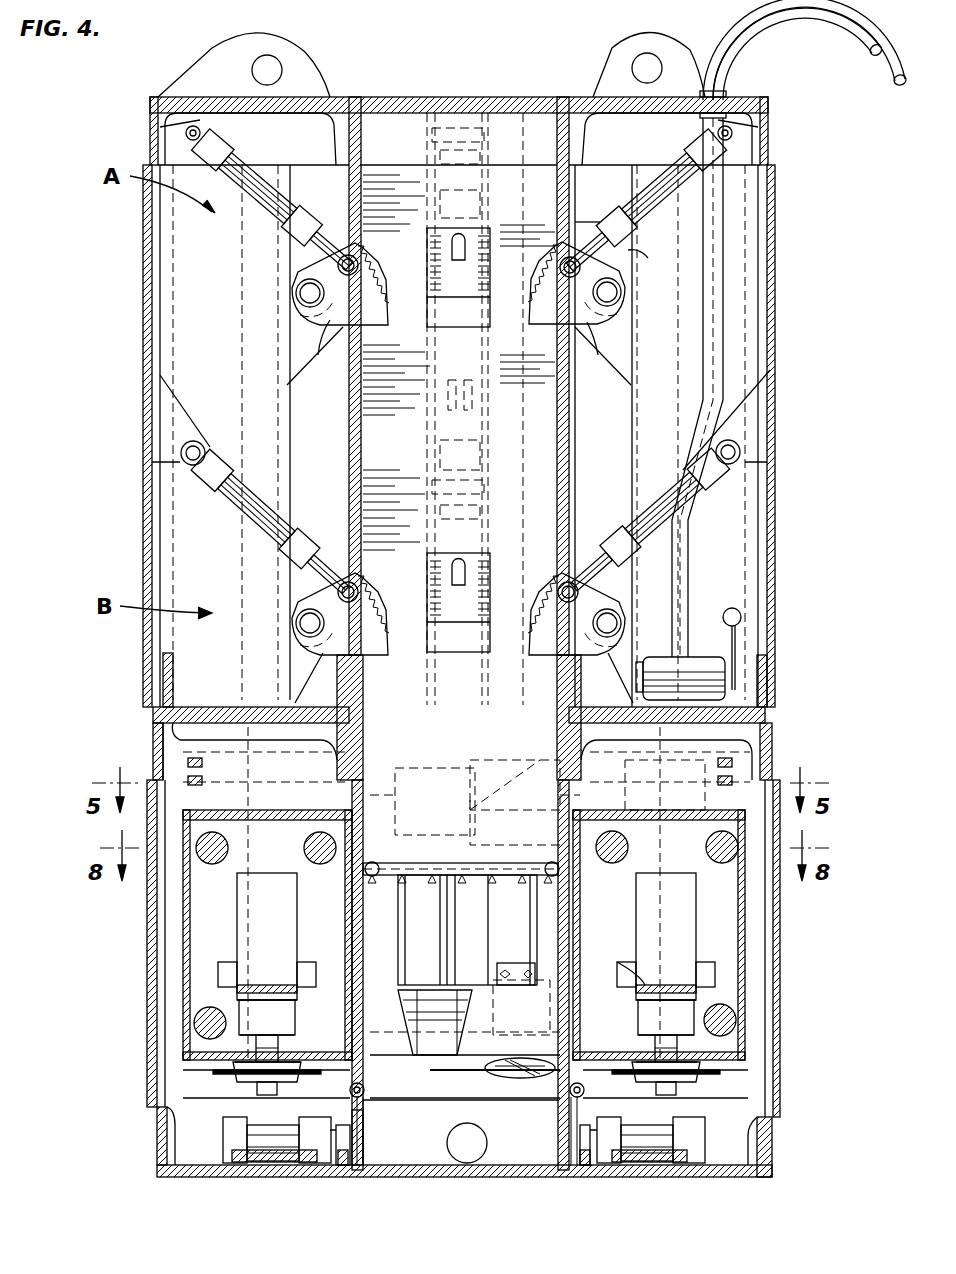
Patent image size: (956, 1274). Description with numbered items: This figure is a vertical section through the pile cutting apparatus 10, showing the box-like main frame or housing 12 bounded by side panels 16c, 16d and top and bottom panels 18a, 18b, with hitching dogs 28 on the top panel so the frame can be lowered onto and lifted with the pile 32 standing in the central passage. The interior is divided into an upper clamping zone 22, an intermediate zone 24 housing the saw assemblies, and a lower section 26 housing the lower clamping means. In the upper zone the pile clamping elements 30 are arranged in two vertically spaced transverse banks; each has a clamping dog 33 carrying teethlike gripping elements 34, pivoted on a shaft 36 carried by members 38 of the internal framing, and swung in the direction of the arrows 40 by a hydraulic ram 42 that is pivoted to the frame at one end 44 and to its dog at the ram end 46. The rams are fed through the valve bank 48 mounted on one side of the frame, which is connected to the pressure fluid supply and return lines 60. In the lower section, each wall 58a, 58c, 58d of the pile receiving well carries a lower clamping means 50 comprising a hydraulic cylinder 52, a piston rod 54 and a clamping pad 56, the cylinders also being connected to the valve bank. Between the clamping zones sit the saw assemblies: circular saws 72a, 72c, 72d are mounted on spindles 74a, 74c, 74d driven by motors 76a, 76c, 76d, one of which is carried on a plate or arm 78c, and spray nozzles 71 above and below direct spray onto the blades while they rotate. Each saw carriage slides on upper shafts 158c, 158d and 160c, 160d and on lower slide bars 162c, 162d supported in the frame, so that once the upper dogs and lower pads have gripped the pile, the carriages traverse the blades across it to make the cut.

The pile cutting apparatus 10 is at (104, 215).
The main frame or housing 12 is at (398, 80).
The side panel 16c is at (770, 230).
The side panel 16d is at (150, 300).
The top panel 18a is at (590, 100).
The bottom panel 18b is at (624, 1180).
The upper clamping zone 22 is at (782, 294).
The intermediate zone 24 is at (782, 922).
The lower section 26 is at (784, 1110).
The hitching dog 28 is at (287, 65).
The pile clamping element 30 is at (332, 330).
The pile 32 is at (560, 447).
The clamping dog 33 is at (545, 330).
The teethlike gripping elements 34 is at (520, 252).
The shaft 36 is at (300, 297).
The members 38 is at (622, 258).
The directional arrows 40 is at (585, 222).
The hydraulic ram 42 is at (245, 225).
The ram pivot end 44 is at (183, 130).
The ram end pivot 46 is at (360, 268).
The valve bank 48 is at (698, 655).
The lower clamping means 50 is at (358, 1180).
The hydraulic cylinder 52 is at (272, 1165).
The piston rod 54 is at (342, 1165).
The clamping pad 56 is at (370, 1143).
The wall of pile receiving well 58a is at (440, 1178).
The wall of pile receiving well 58c is at (548, 732).
The wall of pile receiving well 58d is at (350, 745).
The pressure fluid supply and return lines 60 is at (740, 22).
The spray nozzle 71 is at (374, 878).
The circular saw 72a is at (365, 1090).
The circular saw 72c is at (595, 1075).
The circular saw 72d is at (302, 1075).
The spindle 74a is at (530, 1045).
The spindle 74c is at (697, 1040).
The spindle 74d is at (285, 1040).
The motor 76a is at (530, 926).
The motor 76c is at (683, 928).
The motor 76d is at (290, 938).
The plate or arm 78c is at (635, 985).
The upper carriage shaft 158c is at (722, 863).
The upper carriage shaft 158d is at (228, 848).
The upper carriage shaft 160c is at (610, 863).
The upper carriage shaft 160d is at (322, 864).
The lower slide bar 162c is at (736, 1021).
The lower slide bar 162d is at (198, 1024).